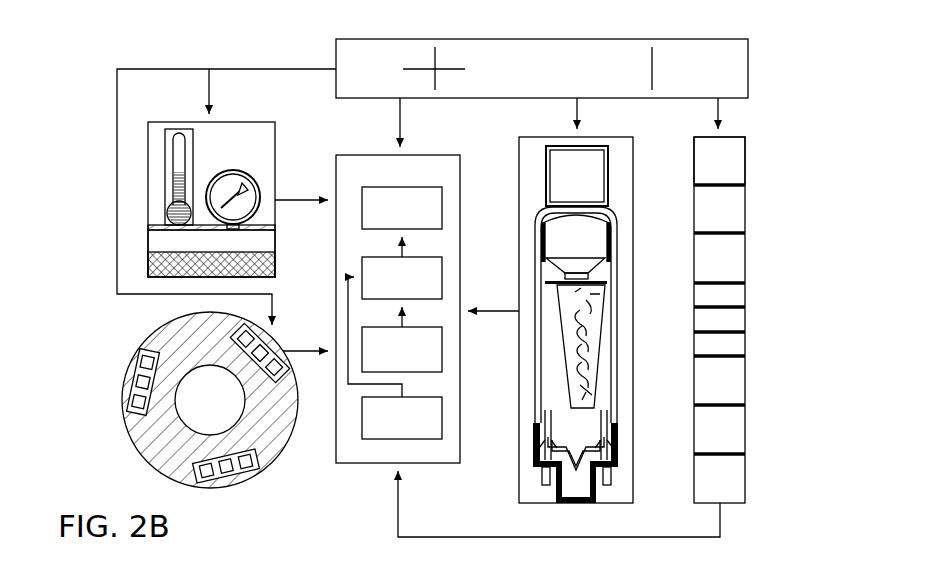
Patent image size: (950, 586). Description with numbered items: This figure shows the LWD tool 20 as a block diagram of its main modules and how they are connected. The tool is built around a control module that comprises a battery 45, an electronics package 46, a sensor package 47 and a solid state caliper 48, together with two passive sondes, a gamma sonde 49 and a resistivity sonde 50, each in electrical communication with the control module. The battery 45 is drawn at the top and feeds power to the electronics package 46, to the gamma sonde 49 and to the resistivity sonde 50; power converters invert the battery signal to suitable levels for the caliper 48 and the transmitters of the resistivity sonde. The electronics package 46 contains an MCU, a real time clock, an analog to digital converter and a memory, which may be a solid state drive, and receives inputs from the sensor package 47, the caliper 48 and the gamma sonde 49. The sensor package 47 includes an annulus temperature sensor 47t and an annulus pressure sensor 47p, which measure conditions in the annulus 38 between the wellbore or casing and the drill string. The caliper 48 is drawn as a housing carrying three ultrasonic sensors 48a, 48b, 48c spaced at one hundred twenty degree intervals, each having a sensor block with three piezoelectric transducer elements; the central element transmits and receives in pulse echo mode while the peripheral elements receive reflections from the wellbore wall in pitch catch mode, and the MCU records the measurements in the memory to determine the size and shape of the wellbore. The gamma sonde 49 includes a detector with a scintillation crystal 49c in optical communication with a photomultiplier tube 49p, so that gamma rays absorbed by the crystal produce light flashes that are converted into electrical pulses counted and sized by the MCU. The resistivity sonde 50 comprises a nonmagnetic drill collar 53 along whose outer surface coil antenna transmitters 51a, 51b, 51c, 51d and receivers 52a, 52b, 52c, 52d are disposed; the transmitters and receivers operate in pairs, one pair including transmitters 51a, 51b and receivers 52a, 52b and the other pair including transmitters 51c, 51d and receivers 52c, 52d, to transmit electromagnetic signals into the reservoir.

The LWD tool 20 is at (76, 70).
The battery 45 is at (555, 38).
The electronics package 46 is at (442, 155).
The sensor package 47 is at (233, 180).
The annulus temperature sensor 47t is at (162, 150).
The annulus pressure sensor 47p is at (236, 170).
The annulus 38 is at (258, 241).
The solid state caliper 48 is at (200, 412).
The ultrasonic sensor 48a is at (277, 342).
The ultrasonic sensor 48b is at (228, 486).
The ultrasonic sensor 48c is at (125, 375).
The gamma sonde 49 is at (604, 310).
The scintillation crystal 49c is at (608, 170).
The photomultiplier tube 49p is at (618, 320).
The resistivity sonde 50 is at (755, 323).
The drill collar 53 is at (733, 149).
The transmitter 51a is at (745, 233).
The transmitter 51b is at (745, 405).
The transmitter 51c is at (745, 185).
The transmitter 51d is at (745, 454).
The receiver 52a is at (745, 307).
The receiver 52b is at (745, 332).
The receiver 52c is at (745, 283).
The receiver 52d is at (745, 356).